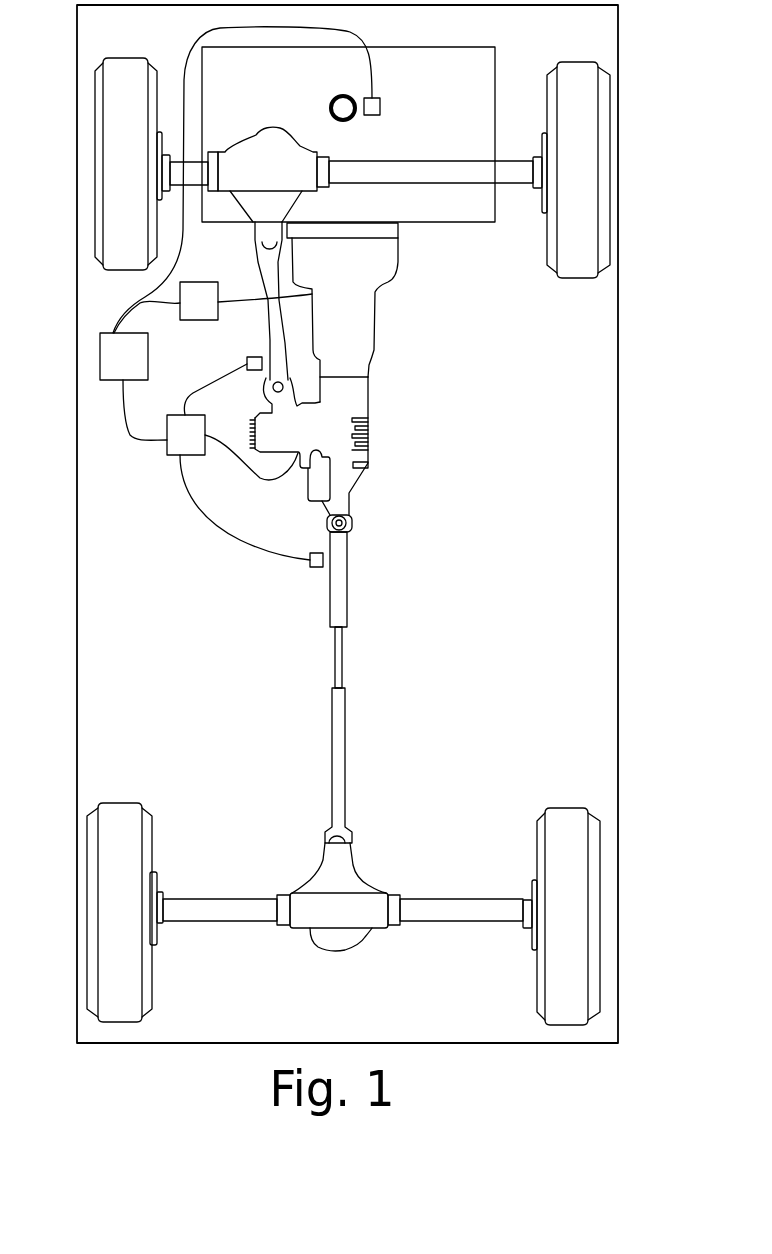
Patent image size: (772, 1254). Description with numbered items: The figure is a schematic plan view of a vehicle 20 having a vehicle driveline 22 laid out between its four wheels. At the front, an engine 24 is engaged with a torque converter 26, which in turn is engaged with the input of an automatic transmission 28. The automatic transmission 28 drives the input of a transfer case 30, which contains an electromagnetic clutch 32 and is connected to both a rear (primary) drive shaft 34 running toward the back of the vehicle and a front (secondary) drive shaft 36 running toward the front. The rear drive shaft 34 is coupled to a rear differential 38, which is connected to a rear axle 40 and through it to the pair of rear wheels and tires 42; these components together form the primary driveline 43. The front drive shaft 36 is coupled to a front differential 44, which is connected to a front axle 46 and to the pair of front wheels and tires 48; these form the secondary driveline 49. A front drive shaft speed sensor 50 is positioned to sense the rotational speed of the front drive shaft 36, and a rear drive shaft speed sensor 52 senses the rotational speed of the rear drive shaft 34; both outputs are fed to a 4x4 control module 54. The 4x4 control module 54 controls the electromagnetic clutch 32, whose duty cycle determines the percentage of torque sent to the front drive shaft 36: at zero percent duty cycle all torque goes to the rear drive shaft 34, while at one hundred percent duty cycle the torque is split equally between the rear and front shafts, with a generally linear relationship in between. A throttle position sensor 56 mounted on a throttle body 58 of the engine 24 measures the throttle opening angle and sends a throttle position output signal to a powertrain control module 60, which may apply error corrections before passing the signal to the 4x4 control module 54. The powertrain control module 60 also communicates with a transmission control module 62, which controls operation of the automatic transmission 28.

The vehicle 20 is at (618, 387).
The vehicle driveline 22 is at (381, 512).
The engine 24 is at (497, 60).
The torque converter 26 is at (398, 228).
The automatic transmission 28 is at (376, 335).
The transfer case 30 is at (368, 402).
The electromagnetic clutch 32 is at (368, 442).
The rear drive shaft 34 is at (345, 620).
The front drive shaft 36 is at (252, 260).
The rear differential 38 is at (353, 945).
The rear axle 40 is at (430, 898).
The rear wheels and tires 42 is at (150, 993).
The primary driveline 43 is at (104, 289).
The front differential 44 is at (263, 131).
The front axle 46 is at (455, 184).
The front wheels and tires 48 is at (95, 125).
The secondary driveline 49 is at (186, 790).
The front drive shaft speed sensor 50 is at (247, 362).
The rear drive shaft speed sensor 52 is at (316, 568).
The 4x4 control module 54 is at (178, 456).
The throttle position sensor 56 is at (380, 109).
The throttle body 58 is at (330, 98).
The powertrain control module 60 is at (100, 356).
The transmission control module 62 is at (193, 320).